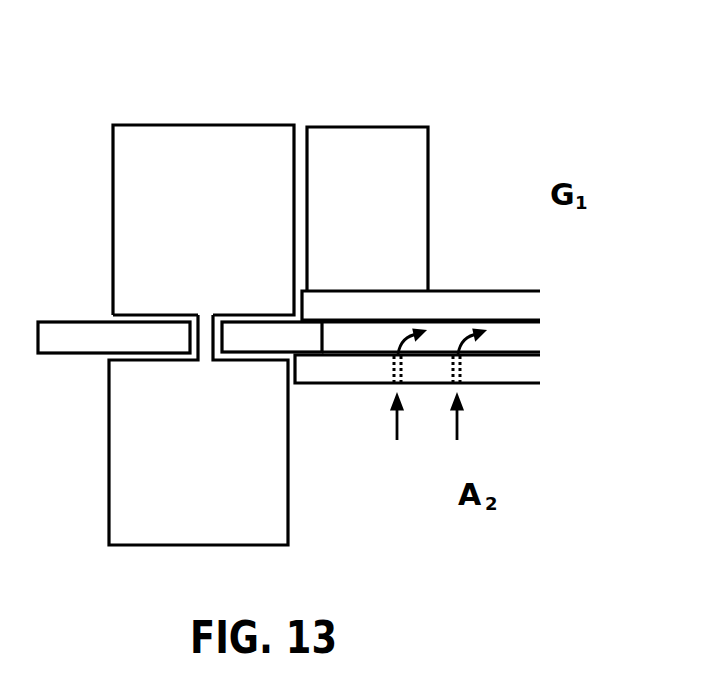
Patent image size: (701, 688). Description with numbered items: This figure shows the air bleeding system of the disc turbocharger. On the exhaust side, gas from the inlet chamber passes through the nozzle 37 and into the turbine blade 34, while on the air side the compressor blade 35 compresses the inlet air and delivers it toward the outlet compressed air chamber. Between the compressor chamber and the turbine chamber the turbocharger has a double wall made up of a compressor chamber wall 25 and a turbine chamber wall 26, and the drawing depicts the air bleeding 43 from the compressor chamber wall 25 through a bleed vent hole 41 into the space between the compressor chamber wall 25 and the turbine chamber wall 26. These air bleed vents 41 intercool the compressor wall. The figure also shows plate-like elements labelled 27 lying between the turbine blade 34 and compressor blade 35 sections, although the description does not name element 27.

The turbine blade 34 is at (255, 125).
The nozzle 37 is at (428, 152).
The compressor blade 35 is at (288, 512).
The partition plates 27 is at (257, 322).
The turbine chamber wall 26 is at (440, 290).
The compressor chamber wall 25 is at (495, 385).
The air bleeding 43 is at (523, 338).
The bleed vent hole 41 is at (392, 383).